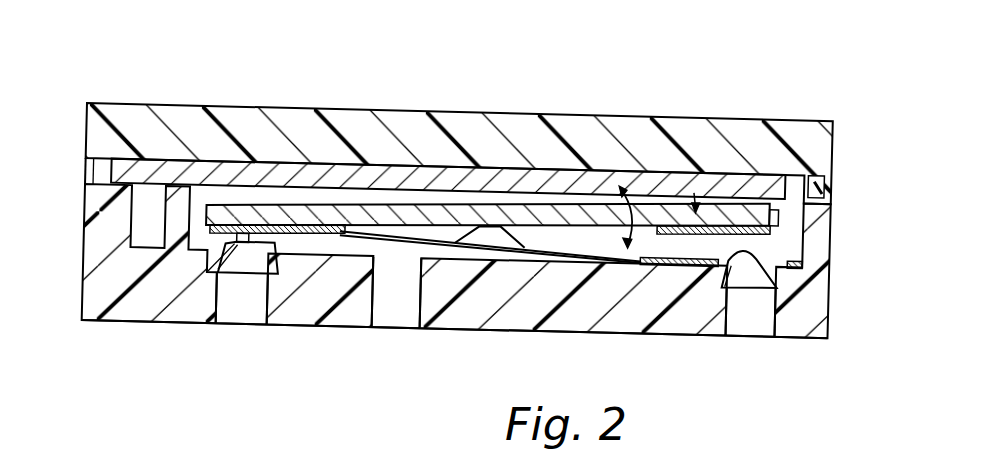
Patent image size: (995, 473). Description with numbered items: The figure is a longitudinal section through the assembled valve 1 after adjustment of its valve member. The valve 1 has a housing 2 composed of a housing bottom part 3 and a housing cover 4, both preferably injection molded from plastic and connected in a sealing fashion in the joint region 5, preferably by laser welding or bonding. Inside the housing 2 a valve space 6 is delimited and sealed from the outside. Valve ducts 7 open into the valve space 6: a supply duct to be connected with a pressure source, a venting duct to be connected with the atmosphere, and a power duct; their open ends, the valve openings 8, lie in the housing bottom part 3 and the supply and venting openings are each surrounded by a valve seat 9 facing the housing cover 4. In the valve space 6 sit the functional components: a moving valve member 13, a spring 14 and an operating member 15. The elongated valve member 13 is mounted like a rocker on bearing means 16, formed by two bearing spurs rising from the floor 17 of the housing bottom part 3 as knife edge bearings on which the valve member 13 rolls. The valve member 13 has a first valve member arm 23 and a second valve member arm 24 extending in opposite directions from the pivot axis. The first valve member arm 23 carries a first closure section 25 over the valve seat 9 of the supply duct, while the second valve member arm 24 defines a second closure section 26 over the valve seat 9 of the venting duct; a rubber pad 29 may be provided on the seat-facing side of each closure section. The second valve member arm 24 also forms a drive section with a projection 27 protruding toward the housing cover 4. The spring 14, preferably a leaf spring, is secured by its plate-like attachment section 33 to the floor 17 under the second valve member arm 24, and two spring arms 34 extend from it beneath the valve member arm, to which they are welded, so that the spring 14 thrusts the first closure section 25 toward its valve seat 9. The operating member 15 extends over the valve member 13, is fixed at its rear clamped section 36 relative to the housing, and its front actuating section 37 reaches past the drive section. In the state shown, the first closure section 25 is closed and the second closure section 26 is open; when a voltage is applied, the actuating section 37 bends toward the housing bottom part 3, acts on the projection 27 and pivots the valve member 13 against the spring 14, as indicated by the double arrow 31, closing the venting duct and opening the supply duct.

The valve 1 is at (76, 108).
The housing 2 is at (836, 296).
The housing bottom part 3 is at (108, 298).
The housing cover 4 is at (125, 122).
The joint region 5 is at (107, 160).
The valve space 6 is at (648, 272).
The valve ducts 7 is at (243, 308).
The valve openings 8 is at (247, 255).
The valve seat 9 is at (228, 248).
The valve member 13 is at (463, 217).
The spring 14 is at (570, 262).
The operating member 15 is at (563, 180).
The bearing means 16 is at (527, 265).
The floor 17 is at (353, 313).
The first valve member arm 23 is at (312, 196).
The second valve member arm 24 is at (693, 193).
The first closure section 25 is at (272, 210).
The second closure section 26 is at (733, 193).
The projection 27 is at (763, 197).
The rubber pad 29 is at (322, 236).
The double arrow 31 is at (637, 233).
The attachment section 33 is at (712, 282).
The spring arms 34 is at (407, 233).
The clamped section 36 is at (158, 172).
The actuating section 37 is at (773, 192).